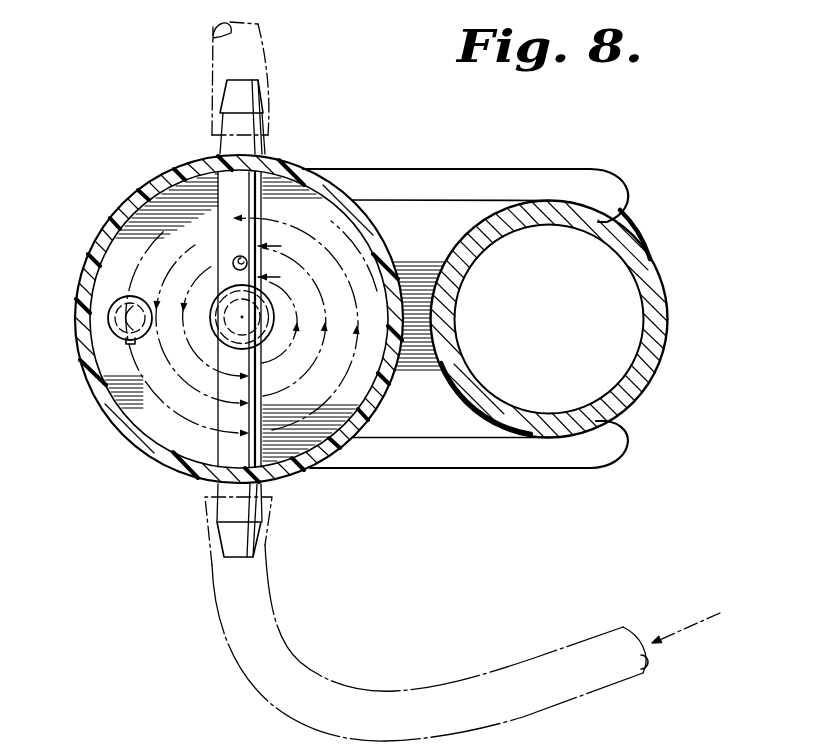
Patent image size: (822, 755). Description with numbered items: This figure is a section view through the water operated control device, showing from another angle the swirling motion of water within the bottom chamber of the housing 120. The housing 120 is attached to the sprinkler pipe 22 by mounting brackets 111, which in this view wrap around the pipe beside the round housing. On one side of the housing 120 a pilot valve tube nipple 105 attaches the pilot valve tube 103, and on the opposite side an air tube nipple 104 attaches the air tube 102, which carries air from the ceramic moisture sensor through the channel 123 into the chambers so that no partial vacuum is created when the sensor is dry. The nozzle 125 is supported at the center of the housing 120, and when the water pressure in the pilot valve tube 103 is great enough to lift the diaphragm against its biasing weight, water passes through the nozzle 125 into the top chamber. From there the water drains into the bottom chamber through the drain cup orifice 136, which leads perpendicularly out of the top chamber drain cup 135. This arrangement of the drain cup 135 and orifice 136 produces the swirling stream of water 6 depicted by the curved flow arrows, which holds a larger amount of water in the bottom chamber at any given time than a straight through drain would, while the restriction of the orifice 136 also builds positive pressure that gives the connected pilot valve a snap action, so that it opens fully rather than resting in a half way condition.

The swirling stream of water 6 is at (190, 430).
The sprinkler pipe 22 is at (633, 253).
The air tube 102 is at (215, 57).
The pilot valve tube 103 is at (476, 682).
The air tube nipple 104 is at (255, 92).
The pilot valve tube nipple 105 is at (227, 548).
The mounting brackets 111 is at (523, 455).
The housing 120 is at (302, 150).
The channel 123 is at (237, 258).
The nozzle 125 is at (252, 323).
The top chamber drain cup 135 is at (123, 317).
The drain cup orifice 136 is at (130, 341).